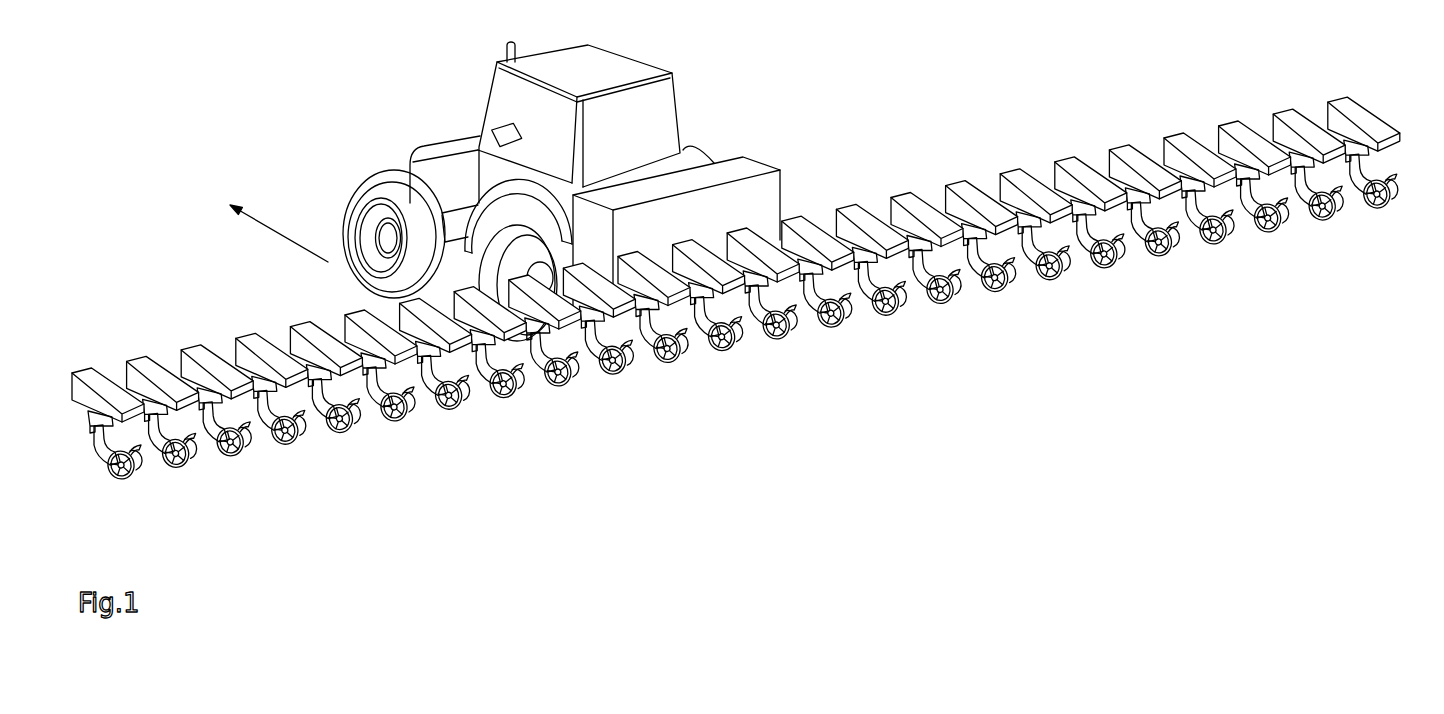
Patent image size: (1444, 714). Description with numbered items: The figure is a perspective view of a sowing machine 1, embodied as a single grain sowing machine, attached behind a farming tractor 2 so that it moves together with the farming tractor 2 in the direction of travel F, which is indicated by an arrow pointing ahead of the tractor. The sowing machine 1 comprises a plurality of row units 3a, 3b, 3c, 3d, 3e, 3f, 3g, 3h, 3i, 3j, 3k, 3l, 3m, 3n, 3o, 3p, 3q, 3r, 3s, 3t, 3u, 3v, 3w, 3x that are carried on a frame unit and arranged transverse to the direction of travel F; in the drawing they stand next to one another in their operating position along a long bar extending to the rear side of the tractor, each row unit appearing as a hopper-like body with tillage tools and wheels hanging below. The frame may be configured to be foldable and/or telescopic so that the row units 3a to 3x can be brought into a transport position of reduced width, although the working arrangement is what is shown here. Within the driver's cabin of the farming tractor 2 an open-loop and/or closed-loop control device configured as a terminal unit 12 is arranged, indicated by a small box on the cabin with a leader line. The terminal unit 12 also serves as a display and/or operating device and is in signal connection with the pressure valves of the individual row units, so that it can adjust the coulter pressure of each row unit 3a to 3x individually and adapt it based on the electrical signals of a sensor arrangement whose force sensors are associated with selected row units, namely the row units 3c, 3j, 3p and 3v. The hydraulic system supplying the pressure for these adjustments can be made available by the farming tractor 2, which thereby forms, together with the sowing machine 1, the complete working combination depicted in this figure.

The sowing machine 1 is at (812, 194).
The farming tractor 2 is at (720, 68).
The terminal unit 12 is at (505, 130).
The direction of travel F is at (279, 238).
The row unit 3a is at (126, 460).
The row unit 3b is at (181, 448).
The row unit 3c is at (234, 436).
The row unit 3d is at (290, 424).
The row unit 3e is at (344, 413).
The row unit 3f is at (398, 401).
The row unit 3g is at (453, 389).
The row unit 3h is at (507, 378).
The row unit 3i is at (560, 366).
The row unit 3j is at (614, 354).
The row unit 3k is at (671, 342).
The row unit 3l is at (723, 330).
The row unit 3m is at (782, 318).
The row unit 3n is at (834, 306).
The row unit 3o is at (888, 294).
The row unit 3p is at (943, 283).
The row unit 3q is at (998, 271).
The row unit 3r is at (1051, 259).
The row unit 3s is at (1106, 246).
The row unit 3t is at (1159, 234).
The row unit 3u is at (1216, 222).
The row unit 3v is at (1270, 210).
The row unit 3w is at (1325, 198).
The row unit 3x is at (1379, 186).